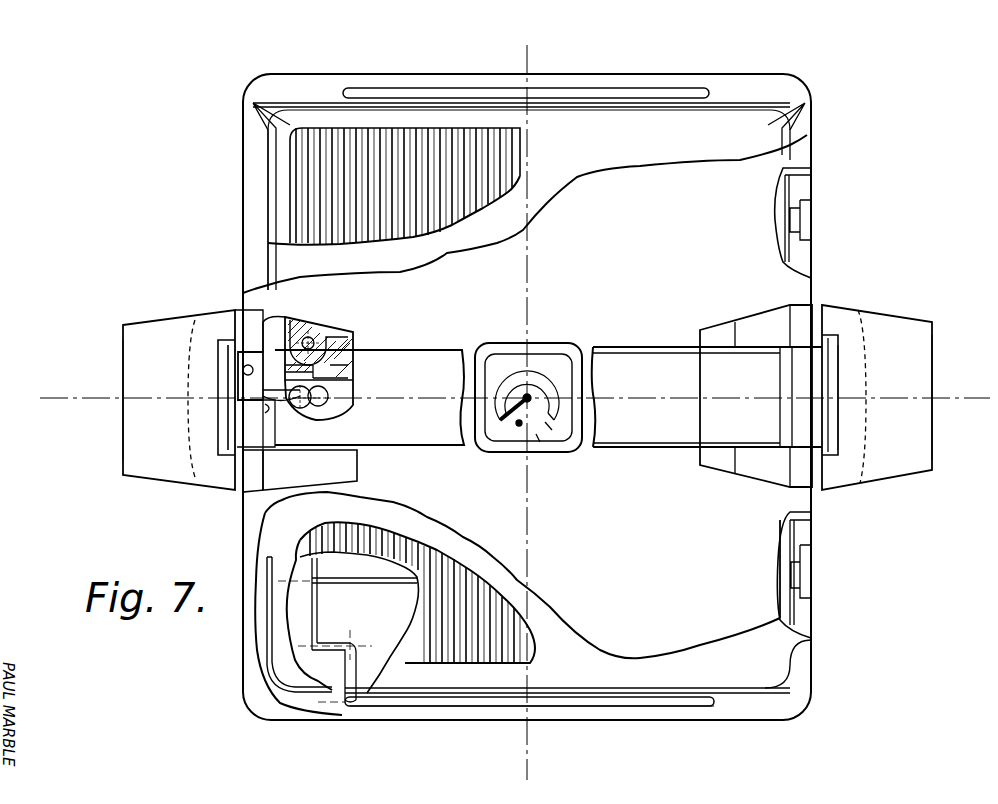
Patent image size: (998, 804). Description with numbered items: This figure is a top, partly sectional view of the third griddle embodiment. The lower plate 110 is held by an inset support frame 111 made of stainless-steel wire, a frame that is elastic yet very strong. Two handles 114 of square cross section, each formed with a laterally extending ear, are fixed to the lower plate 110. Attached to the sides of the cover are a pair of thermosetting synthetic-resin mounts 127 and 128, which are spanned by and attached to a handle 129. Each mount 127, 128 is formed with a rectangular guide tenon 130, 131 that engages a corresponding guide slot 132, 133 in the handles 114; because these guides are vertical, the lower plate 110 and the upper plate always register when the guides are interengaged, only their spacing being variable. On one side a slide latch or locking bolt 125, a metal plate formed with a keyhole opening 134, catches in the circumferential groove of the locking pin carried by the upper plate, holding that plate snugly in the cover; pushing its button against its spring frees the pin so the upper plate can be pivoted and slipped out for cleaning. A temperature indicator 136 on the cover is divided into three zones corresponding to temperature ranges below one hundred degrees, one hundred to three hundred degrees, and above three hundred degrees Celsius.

The lower plate 110 is at (500, 170).
The inset support frame 111 is at (372, 702).
The handles 114 is at (135, 412).
The locking bolt 125 is at (360, 392).
The thermosetting synthetic-resin mount 127 is at (308, 468).
The thermosetting synthetic-resin mount 128 is at (752, 325).
The handle 129 is at (430, 350).
The rectangular guide tenon 130 is at (262, 316).
The rectangular guide tenon 131 is at (845, 325).
The guide slot 132 is at (218, 388).
The guide slot 133 is at (840, 392).
The keyhole opening 134 is at (353, 348).
The temperature indicator 136 is at (550, 360).